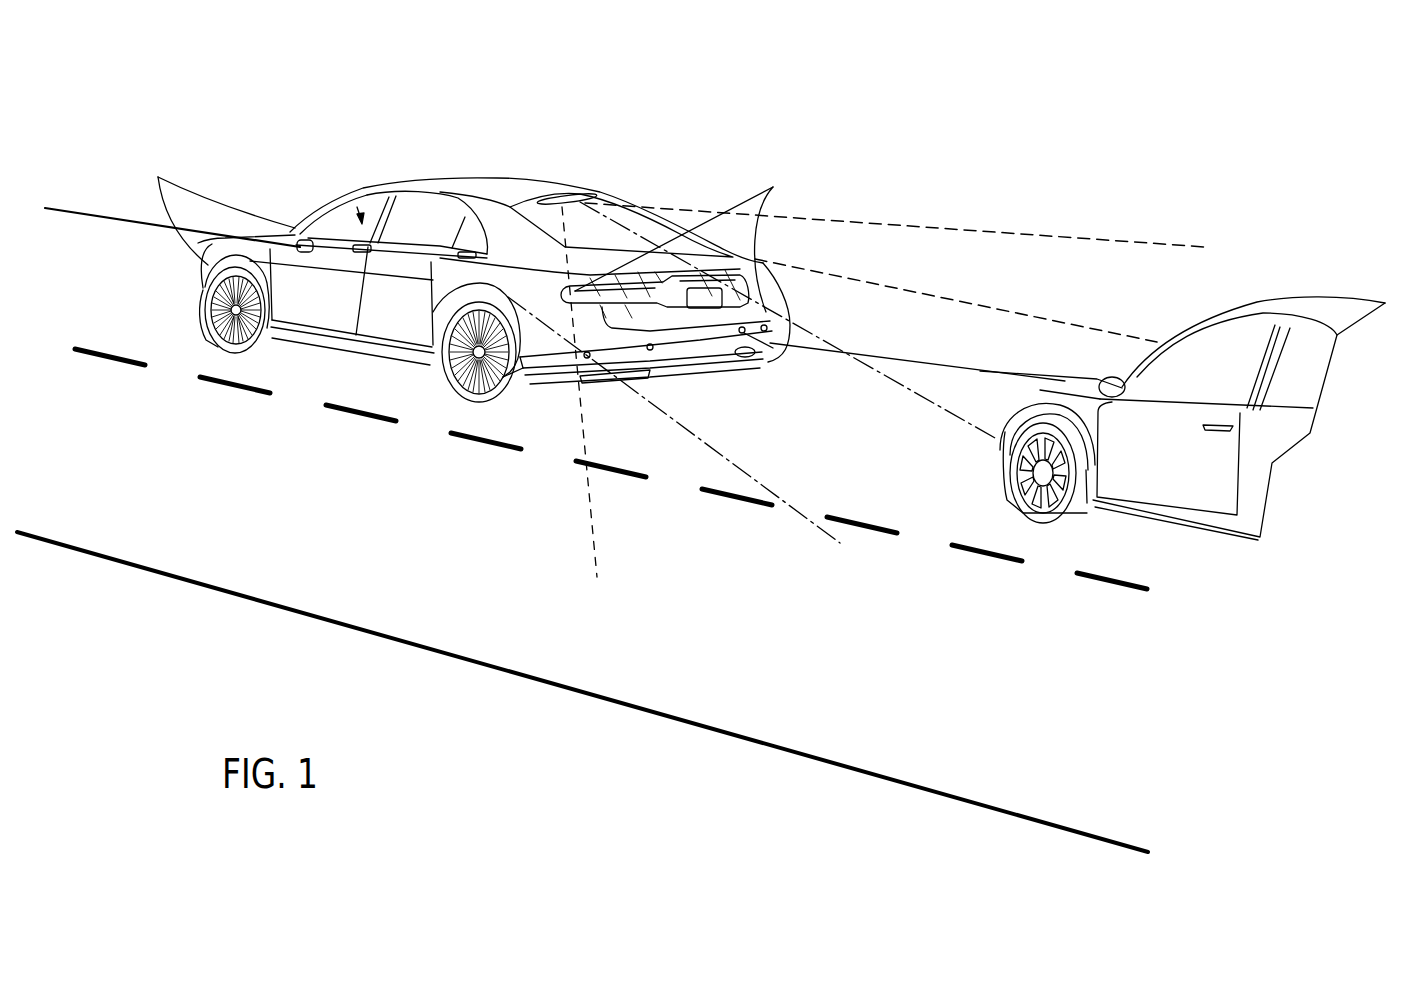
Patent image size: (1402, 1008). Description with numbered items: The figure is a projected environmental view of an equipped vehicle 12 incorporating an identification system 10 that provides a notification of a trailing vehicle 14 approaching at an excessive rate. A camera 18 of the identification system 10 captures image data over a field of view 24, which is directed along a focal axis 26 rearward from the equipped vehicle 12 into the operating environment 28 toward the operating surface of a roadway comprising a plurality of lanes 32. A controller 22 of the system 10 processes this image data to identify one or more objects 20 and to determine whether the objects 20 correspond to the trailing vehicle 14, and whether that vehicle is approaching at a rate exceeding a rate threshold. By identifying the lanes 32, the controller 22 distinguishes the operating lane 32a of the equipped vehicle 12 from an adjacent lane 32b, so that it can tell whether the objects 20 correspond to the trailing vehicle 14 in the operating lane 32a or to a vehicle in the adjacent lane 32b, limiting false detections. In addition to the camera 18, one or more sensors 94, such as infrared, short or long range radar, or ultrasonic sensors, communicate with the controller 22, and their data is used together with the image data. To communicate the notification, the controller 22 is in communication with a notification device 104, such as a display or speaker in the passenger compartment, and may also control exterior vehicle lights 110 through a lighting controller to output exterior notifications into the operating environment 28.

The identification system 10 is at (718, 124).
The equipped vehicle 12 is at (483, 256).
The trailing vehicle 14 is at (1182, 366).
The objects 20 is at (1290, 310).
The camera 18 is at (571, 190).
The controller 22 is at (262, 234).
The field of view 24 is at (983, 307).
The focal axis 26 is at (942, 404).
The operating environment 28 is at (1002, 148).
The lanes 32 is at (582, 530).
The operating lane 32a is at (1137, 547).
The adjacent lane 32b is at (681, 661).
The sensors 94 is at (208, 288).
The notification device 104 is at (357, 207).
The exterior vehicle lights 110 is at (474, 231).